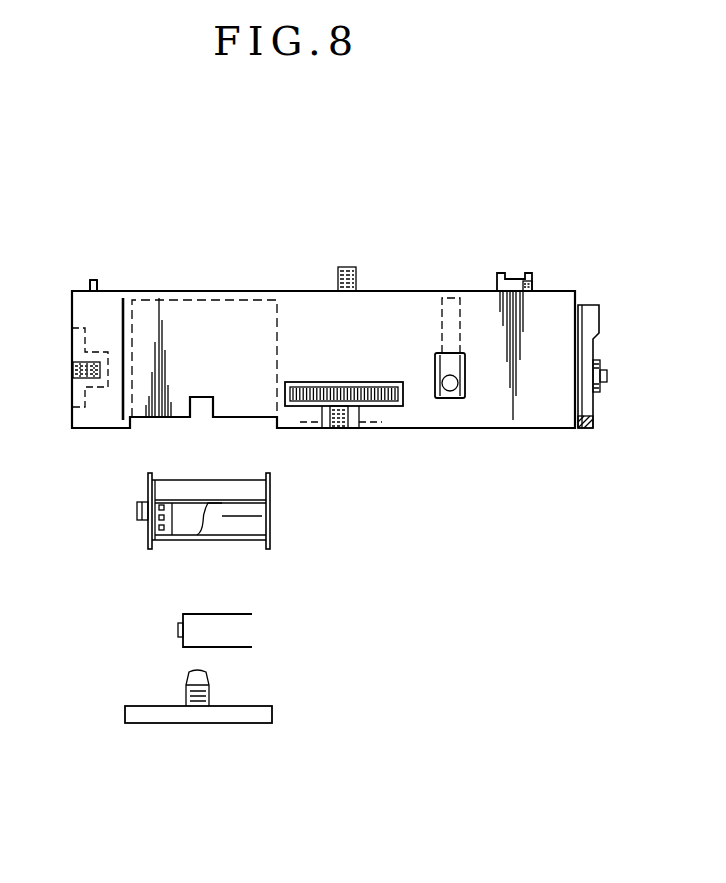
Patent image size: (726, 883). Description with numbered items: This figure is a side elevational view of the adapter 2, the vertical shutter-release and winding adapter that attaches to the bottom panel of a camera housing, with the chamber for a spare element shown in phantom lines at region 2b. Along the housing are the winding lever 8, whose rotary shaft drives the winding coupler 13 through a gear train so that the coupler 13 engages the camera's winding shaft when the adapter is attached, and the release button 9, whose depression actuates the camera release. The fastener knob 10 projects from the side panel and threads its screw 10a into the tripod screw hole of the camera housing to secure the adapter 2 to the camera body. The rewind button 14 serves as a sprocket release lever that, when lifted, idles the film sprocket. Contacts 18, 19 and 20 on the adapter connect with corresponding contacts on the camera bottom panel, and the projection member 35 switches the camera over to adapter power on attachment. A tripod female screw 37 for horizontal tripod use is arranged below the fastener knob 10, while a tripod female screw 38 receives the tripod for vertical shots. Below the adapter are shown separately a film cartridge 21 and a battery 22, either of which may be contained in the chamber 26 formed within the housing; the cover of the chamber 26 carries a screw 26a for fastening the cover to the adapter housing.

The adapter 2 is at (323, 326).
The housing compartment 2b is at (204, 320).
The winding lever 8 is at (608, 359).
The release button 9 is at (615, 370).
The fastener knob 10 is at (344, 433).
The screw 10a is at (368, 253).
The winding coupler 13 is at (537, 327).
The rewind button 14 is at (431, 348).
The contact 18 is at (80, 254).
The contact 19 is at (93, 285).
The contact 20 is at (93, 285).
The film cartridge 21 is at (234, 511).
The battery 22 is at (243, 632).
The chamber 26 is at (207, 739).
The screw 26a is at (229, 680).
The projection member 35 is at (93, 285).
The tripod female screw 37 is at (341, 445).
The tripod female screw 38 is at (70, 377).